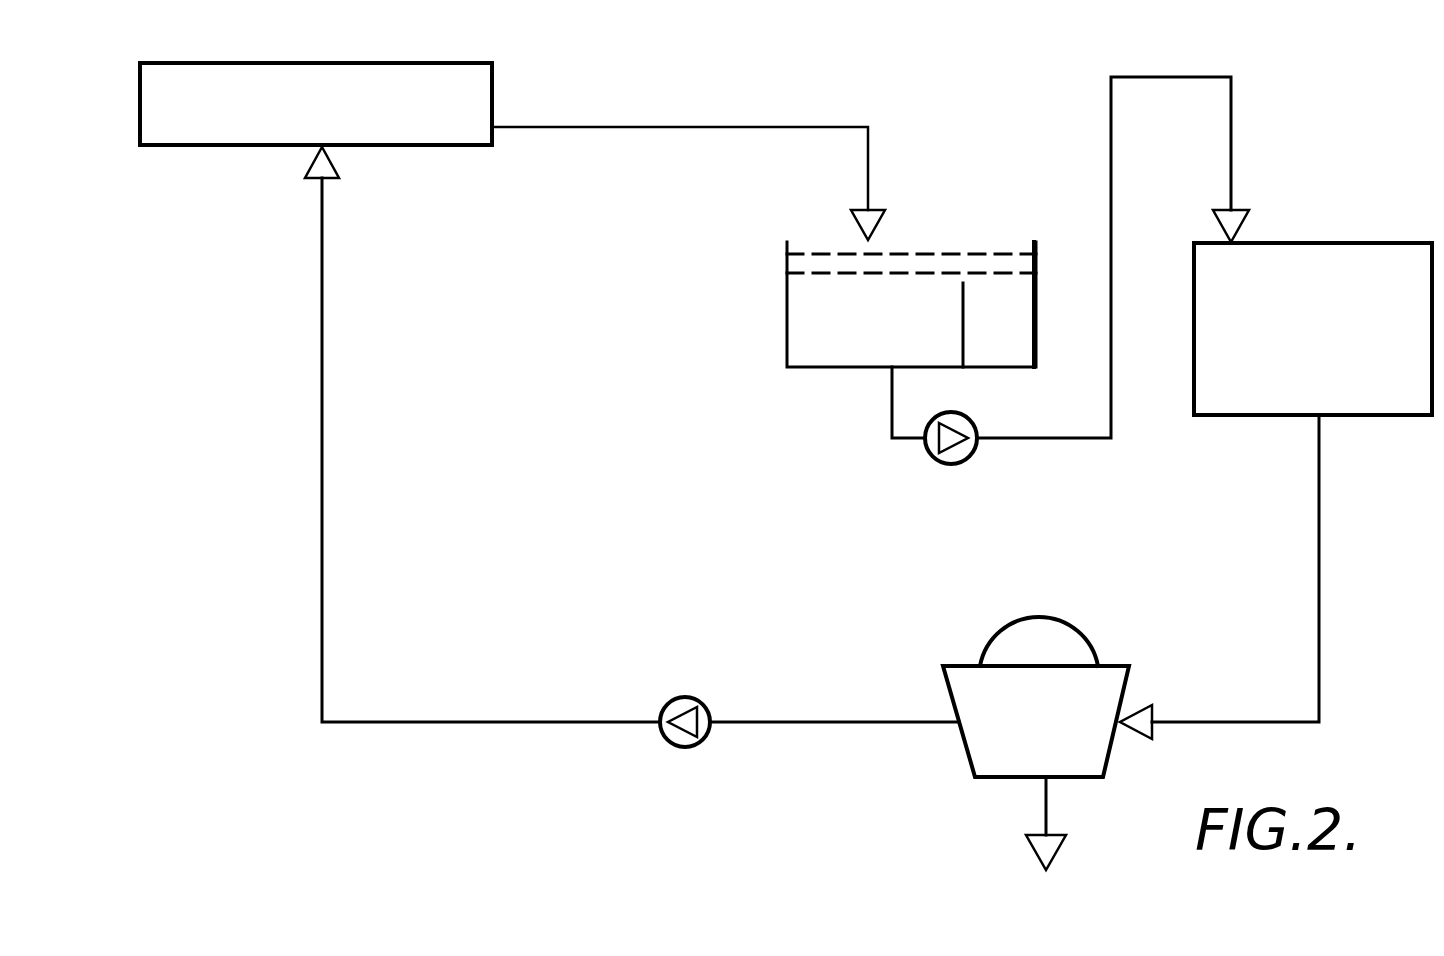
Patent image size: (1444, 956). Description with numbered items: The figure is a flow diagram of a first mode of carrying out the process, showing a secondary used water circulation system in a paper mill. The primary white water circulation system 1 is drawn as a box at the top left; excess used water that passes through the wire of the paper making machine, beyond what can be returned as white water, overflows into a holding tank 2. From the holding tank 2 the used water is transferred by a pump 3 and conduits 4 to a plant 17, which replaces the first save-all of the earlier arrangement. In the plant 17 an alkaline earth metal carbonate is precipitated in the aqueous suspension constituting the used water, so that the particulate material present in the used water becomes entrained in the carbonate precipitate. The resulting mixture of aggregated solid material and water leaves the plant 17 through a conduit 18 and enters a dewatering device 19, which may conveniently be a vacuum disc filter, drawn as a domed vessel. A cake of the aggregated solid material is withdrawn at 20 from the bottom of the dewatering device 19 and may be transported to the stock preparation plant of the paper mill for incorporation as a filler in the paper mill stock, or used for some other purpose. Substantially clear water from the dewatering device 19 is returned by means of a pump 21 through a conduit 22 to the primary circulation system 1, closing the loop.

The primary white water circulation system 1 is at (320, 113).
The holding tank 2 is at (787, 323).
The pump 3 is at (970, 415).
The conduits 4 is at (1111, 200).
The plant 17 is at (1330, 347).
The conduit 18 is at (1320, 608).
The dewatering device 19 is at (1085, 612).
The cake withdrawal 20 is at (1040, 808).
The pump 21 is at (688, 697).
The conduit 22 is at (323, 507).